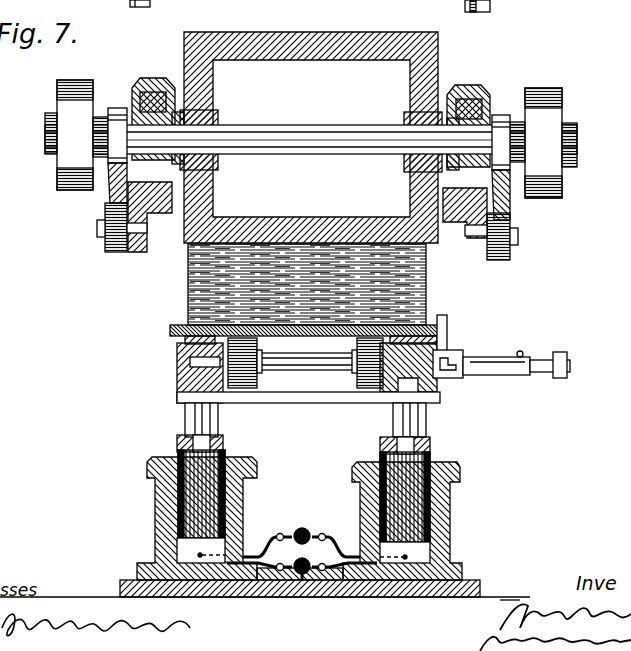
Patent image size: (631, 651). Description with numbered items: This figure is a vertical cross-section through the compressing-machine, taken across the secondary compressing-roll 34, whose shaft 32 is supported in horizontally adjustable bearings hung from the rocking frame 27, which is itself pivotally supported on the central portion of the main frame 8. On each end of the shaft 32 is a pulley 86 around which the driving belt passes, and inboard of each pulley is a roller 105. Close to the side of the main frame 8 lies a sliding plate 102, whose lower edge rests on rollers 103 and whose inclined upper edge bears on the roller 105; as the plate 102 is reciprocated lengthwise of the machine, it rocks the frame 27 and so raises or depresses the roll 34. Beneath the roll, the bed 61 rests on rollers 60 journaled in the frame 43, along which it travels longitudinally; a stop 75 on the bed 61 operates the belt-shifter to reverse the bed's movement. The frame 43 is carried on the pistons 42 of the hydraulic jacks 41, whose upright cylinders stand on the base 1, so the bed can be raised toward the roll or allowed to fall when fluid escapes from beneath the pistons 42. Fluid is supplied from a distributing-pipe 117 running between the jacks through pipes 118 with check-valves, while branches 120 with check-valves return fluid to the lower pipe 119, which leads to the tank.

The base 1 is at (253, 583).
The main frame 8 is at (156, 215).
The rocking frame 27 is at (158, 76).
The shaft 32 is at (283, 142).
The secondary compressing-roll 34 is at (315, 137).
The hydraulic jack 41 is at (304, 518).
The piston 42 is at (303, 472).
The frame 43 is at (176, 376).
The roller 60 is at (358, 346).
The bed 61 is at (170, 327).
The stop 75 is at (448, 325).
The pulley 86 is at (311, 139).
The sliding plate 102 is at (108, 190).
The roller 103 is at (517, 253).
The roller 105 is at (117, 108).
The distributing-pipe 117 is at (328, 512).
The pipe 118 is at (305, 538).
The pipe 119 is at (305, 582).
The branch 120 is at (302, 557).